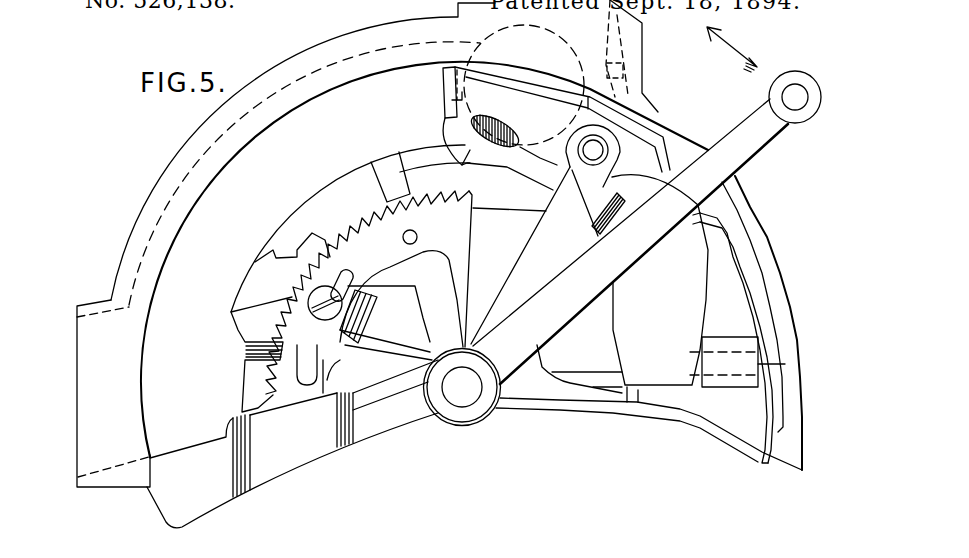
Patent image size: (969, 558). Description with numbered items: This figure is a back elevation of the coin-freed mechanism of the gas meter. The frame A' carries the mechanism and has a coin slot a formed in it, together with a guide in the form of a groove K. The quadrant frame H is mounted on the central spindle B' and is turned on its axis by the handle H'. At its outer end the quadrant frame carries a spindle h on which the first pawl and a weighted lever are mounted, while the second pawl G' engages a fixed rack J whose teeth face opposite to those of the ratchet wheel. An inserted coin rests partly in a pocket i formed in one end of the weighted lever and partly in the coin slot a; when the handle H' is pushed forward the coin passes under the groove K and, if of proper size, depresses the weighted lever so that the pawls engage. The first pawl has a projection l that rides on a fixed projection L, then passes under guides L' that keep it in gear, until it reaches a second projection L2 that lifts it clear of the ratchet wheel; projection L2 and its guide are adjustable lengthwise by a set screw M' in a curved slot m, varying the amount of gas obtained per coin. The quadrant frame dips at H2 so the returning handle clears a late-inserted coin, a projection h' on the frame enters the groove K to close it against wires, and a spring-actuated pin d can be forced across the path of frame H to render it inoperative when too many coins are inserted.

The frame A' is at (439, 265).
The groove K is at (322, 68).
The central spindle B' is at (462, 387).
The fixed rack J is at (406, 292).
The fixed projection L is at (350, 227).
The guides L' is at (292, 222).
The second projection L2 is at (242, 373).
The set screw M' is at (370, 315).
The curved slot m is at (303, 385).
The second pawl G' is at (483, 128).
The pocket i is at (452, 95).
The coin slot a is at (610, 23).
The projection h' is at (642, 60).
The spindle h is at (593, 160).
The quadrant frame H is at (622, 315).
The handle H' is at (564, 150).
The dip H2 is at (702, 215).
The projection l is at (660, 280).
The spring actuated pin d is at (752, 360).